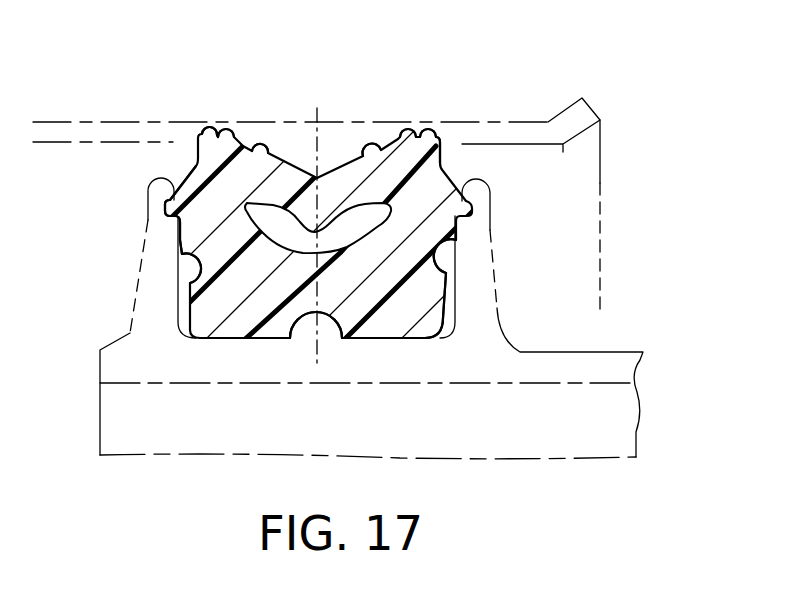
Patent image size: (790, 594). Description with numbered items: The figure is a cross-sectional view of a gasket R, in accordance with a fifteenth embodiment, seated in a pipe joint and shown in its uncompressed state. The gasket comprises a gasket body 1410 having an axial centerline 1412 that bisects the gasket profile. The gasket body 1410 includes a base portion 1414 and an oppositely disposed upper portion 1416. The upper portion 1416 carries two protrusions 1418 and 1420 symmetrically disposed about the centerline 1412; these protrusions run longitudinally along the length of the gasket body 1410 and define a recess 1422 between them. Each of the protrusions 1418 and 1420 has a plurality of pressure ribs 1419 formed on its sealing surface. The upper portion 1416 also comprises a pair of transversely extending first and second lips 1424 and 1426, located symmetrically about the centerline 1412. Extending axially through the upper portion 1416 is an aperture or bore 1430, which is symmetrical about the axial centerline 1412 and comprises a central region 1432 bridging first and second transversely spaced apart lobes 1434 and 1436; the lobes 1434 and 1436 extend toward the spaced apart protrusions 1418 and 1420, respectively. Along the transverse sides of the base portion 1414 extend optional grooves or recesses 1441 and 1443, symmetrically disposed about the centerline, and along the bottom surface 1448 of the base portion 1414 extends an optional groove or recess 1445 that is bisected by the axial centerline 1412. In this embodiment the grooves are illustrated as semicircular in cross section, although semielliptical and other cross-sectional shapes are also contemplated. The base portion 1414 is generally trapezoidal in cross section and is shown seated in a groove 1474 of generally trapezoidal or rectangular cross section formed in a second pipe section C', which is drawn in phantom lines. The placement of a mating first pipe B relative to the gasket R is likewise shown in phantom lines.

The gasket body 1410 is at (167, 281).
The axial centerline 1412 is at (323, 313).
The base portion 1414 is at (425, 322).
The upper portion 1416 is at (188, 231).
The protrusion 1418 is at (212, 140).
The pressure ribs 1419 is at (267, 128).
The protrusion 1420 is at (427, 142).
The recess 1422 is at (323, 170).
The first lip 1424 is at (152, 183).
The second lip 1426 is at (470, 183).
The aperture or bore 1430 is at (391, 212).
The central region 1432 is at (197, 245).
The first lobe 1434 is at (205, 160).
The second lobe 1436 is at (441, 168).
The groove or recess 1441 is at (184, 262).
The groove or recess 1443 is at (437, 266).
The groove or recess 1445 is at (326, 339).
The bottom surface 1448 is at (229, 340).
The groove 1474 is at (446, 290).
The gasket R is at (400, 362).
The first pipe B is at (93, 122).
The second pipe section C' is at (650, 318).